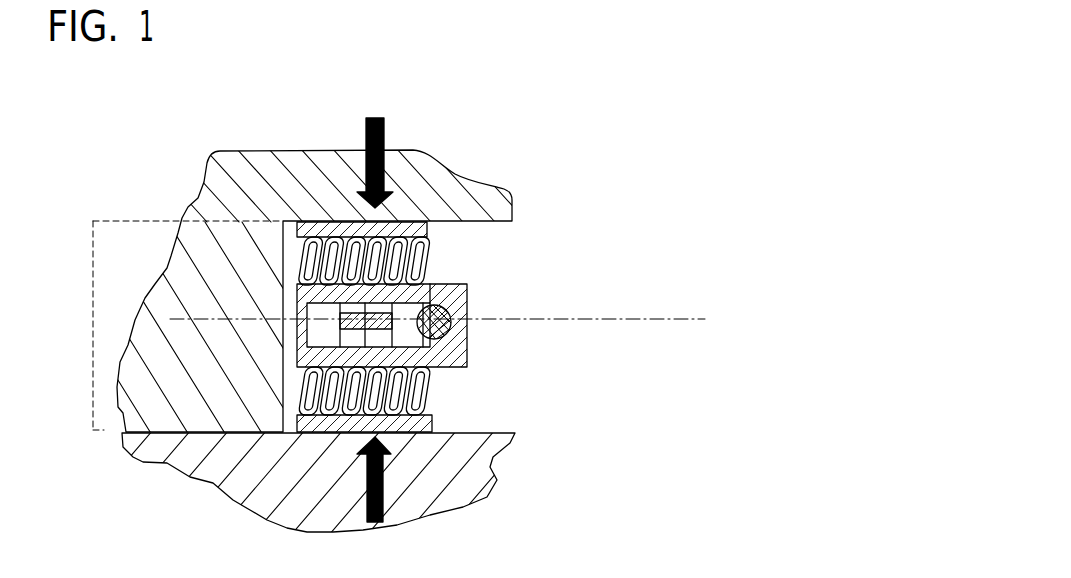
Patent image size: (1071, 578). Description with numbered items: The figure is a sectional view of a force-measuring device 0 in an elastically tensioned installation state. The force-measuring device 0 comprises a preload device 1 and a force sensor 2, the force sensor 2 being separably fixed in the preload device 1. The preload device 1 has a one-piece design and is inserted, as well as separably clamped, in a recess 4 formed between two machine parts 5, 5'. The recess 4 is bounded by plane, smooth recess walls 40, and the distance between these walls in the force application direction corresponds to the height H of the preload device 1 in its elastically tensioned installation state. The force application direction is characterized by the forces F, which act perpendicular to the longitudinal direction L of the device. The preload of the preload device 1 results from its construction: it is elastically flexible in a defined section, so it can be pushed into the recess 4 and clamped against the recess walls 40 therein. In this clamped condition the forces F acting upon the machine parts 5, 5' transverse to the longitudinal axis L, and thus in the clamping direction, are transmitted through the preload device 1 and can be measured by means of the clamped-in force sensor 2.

The force-measuring device 0 is at (467, 258).
The preload device 1 is at (452, 283).
The force sensor 2 is at (392, 313).
The recess 4 is at (410, 332).
The recess walls 40 is at (485, 433).
The machine part 5 is at (279, 291).
The machine part 5' is at (405, 482).
The longitudinal direction L is at (454, 312).
The height H is at (93, 327).
The forces F is at (375, 325).